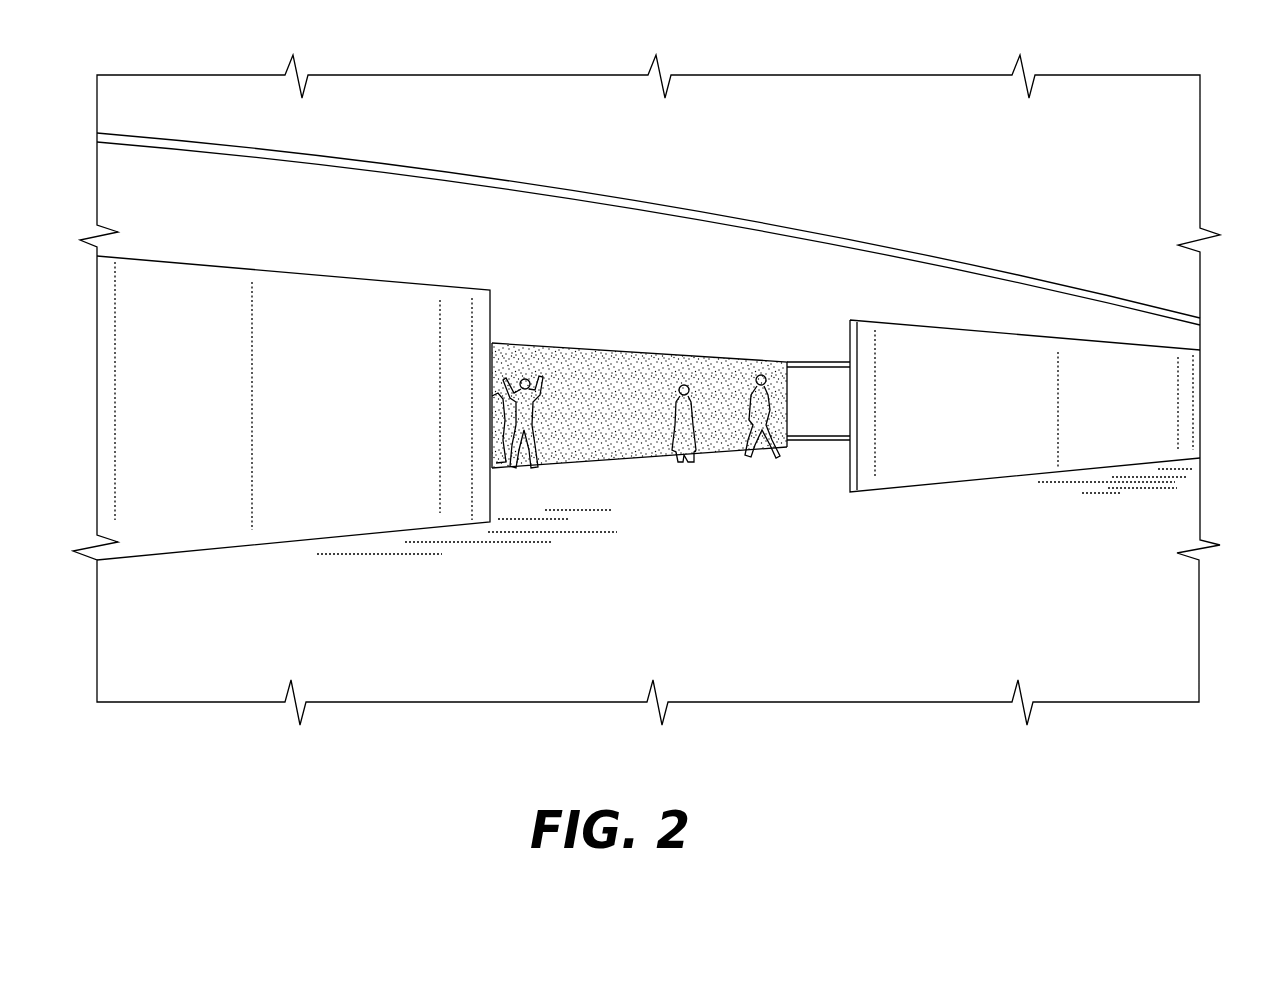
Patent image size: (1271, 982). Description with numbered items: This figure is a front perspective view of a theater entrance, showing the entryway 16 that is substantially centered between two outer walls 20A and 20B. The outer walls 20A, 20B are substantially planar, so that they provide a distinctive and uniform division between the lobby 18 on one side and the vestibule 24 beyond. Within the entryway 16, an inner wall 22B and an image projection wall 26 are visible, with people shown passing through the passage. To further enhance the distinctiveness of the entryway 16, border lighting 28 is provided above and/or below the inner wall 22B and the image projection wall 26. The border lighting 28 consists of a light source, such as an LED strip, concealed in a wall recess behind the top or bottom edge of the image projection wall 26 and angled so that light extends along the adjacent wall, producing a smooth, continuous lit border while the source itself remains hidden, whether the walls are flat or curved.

The entryway 16 is at (668, 541).
The lobby 18 is at (1015, 638).
The outer wall 20A is at (267, 398).
The outer wall 20B is at (1012, 413).
The inner wall 22B is at (801, 411).
The vestibule 24 is at (722, 493).
The image projection wall 26 is at (562, 396).
The border lighting 28 is at (817, 362).